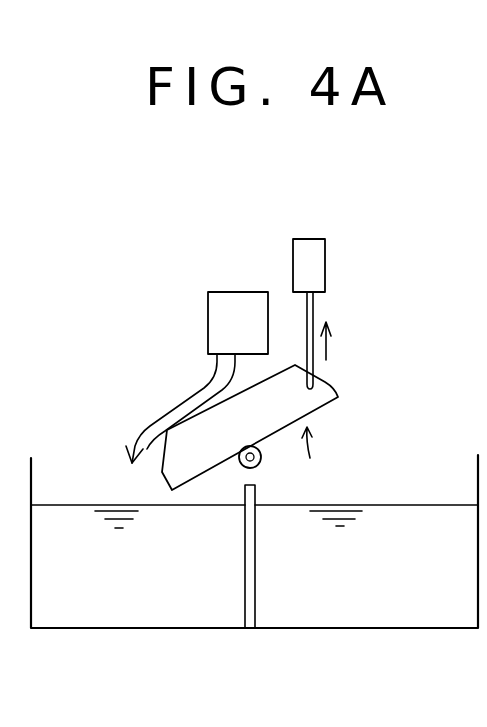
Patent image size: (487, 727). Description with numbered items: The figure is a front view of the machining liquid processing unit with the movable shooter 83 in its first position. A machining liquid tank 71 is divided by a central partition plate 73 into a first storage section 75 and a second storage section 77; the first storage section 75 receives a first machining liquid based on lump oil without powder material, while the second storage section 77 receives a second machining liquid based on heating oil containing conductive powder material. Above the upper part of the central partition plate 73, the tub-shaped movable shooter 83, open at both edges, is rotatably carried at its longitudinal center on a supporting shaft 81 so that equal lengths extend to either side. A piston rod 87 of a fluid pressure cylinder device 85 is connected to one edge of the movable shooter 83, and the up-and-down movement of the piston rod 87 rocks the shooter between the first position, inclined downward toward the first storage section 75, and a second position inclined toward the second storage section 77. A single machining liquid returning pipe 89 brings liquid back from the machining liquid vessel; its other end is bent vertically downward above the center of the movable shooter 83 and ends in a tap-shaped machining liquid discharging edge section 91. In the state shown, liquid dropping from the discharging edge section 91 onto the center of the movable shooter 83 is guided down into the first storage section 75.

The machining liquid tank 71 is at (453, 627).
The central partition plate 73 is at (256, 567).
The first storage section 75 is at (198, 607).
The second storage section 77 is at (345, 608).
The supporting shaft 81 is at (261, 457).
The movable shooter 83 is at (313, 403).
The fluid pressure cylinder device 85 is at (308, 250).
The piston rod 87 is at (309, 310).
The machining liquid returning pipe 89 is at (236, 300).
The machining liquid discharging edge section 91 is at (213, 362).